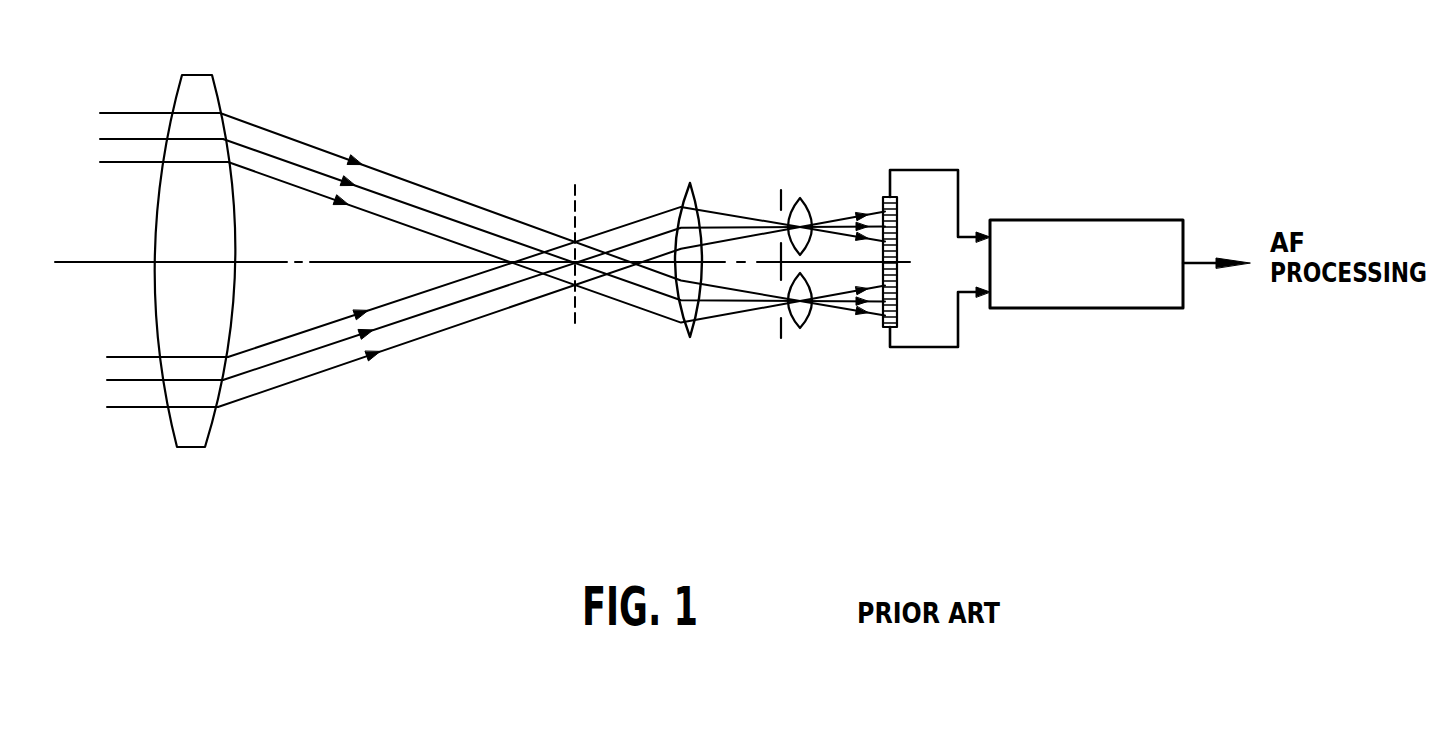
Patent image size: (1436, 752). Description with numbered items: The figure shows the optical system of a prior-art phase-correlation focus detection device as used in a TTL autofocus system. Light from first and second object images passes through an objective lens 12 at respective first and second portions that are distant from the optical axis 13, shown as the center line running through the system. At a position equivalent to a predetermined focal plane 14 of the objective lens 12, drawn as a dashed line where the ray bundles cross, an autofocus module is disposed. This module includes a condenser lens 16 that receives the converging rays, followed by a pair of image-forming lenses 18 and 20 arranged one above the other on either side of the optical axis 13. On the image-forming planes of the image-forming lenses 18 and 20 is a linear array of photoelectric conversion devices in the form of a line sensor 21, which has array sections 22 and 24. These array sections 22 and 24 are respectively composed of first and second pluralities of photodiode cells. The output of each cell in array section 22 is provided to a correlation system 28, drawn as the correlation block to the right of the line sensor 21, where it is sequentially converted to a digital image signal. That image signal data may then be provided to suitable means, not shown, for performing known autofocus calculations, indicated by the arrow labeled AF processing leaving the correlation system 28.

The objective lens 12 is at (205, 447).
The optical axis 13 is at (65, 262).
The focal plane 14 is at (575, 323).
The condenser lens 16 is at (687, 337).
The image-forming lens 18 is at (802, 197).
The image-forming lens 20 is at (800, 328).
The line sensor 21 is at (878, 194).
The array section 22 is at (897, 202).
The array section 24 is at (898, 312).
The correlation system 28 is at (1118, 220).